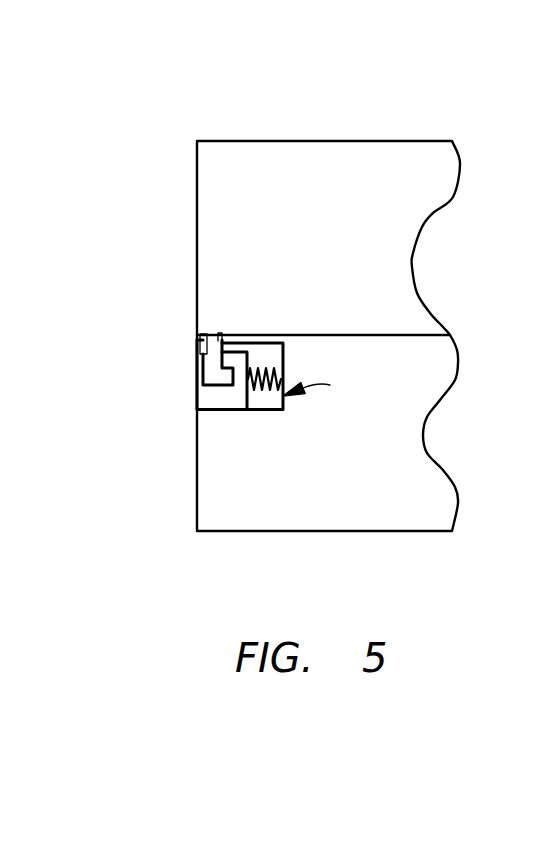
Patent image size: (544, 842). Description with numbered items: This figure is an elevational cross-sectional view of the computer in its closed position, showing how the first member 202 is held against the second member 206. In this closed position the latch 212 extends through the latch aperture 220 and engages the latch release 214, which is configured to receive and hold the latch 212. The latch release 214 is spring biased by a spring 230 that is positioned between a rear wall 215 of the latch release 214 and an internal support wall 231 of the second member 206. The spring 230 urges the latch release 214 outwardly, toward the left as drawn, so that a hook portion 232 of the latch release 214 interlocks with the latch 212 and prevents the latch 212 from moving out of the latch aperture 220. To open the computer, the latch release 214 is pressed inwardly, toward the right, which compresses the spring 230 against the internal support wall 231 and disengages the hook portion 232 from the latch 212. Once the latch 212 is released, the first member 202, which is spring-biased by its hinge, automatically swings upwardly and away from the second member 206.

The first member 202 is at (380, 139).
The second member 206 is at (367, 515).
The latch 212 is at (215, 343).
The latch release 214 is at (201, 395).
The rear wall 215 is at (248, 363).
The latch aperture 220 is at (222, 337).
The spring 230 is at (267, 385).
The internal support wall 231 is at (328, 385).
The hook portion 232 is at (272, 347).